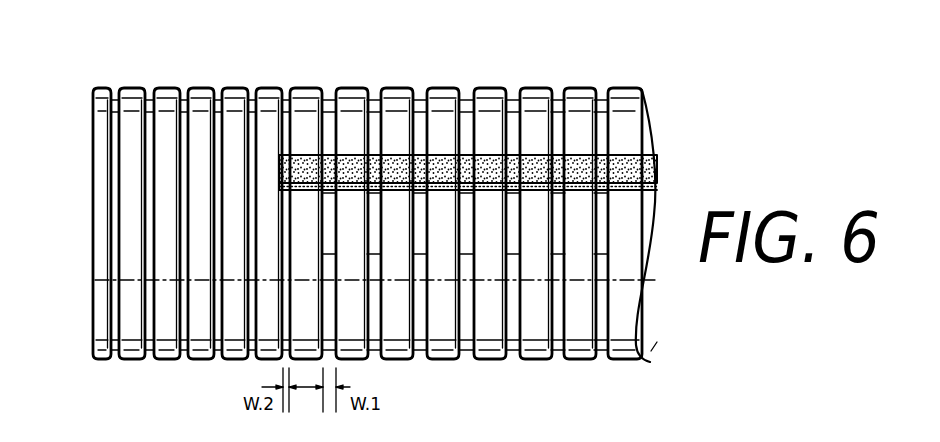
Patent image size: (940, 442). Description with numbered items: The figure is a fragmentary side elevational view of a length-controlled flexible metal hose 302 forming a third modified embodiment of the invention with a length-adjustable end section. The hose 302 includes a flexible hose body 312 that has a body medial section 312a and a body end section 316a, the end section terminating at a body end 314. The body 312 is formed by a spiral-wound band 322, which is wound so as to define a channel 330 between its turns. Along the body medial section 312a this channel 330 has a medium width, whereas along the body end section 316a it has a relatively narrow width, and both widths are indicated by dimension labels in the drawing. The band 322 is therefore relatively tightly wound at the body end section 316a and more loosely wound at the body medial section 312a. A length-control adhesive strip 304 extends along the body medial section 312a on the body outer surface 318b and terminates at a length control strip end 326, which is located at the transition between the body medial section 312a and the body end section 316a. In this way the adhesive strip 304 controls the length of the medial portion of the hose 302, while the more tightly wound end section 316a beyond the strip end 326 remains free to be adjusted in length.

The length-controlled flexible hose 302 is at (643, 48).
The length-control adhesive strip 304 is at (663, 155).
The flexible hose body 312 is at (516, 271).
The body medial section 312a is at (448, 211).
The tube end portion 314 is at (100, 113).
The body end section 316a is at (182, 88).
The body outer surface 318b is at (623, 123).
The spiral-wound band 322 is at (540, 362).
The length control strip end 326 is at (277, 180).
The channel 330 is at (514, 338).